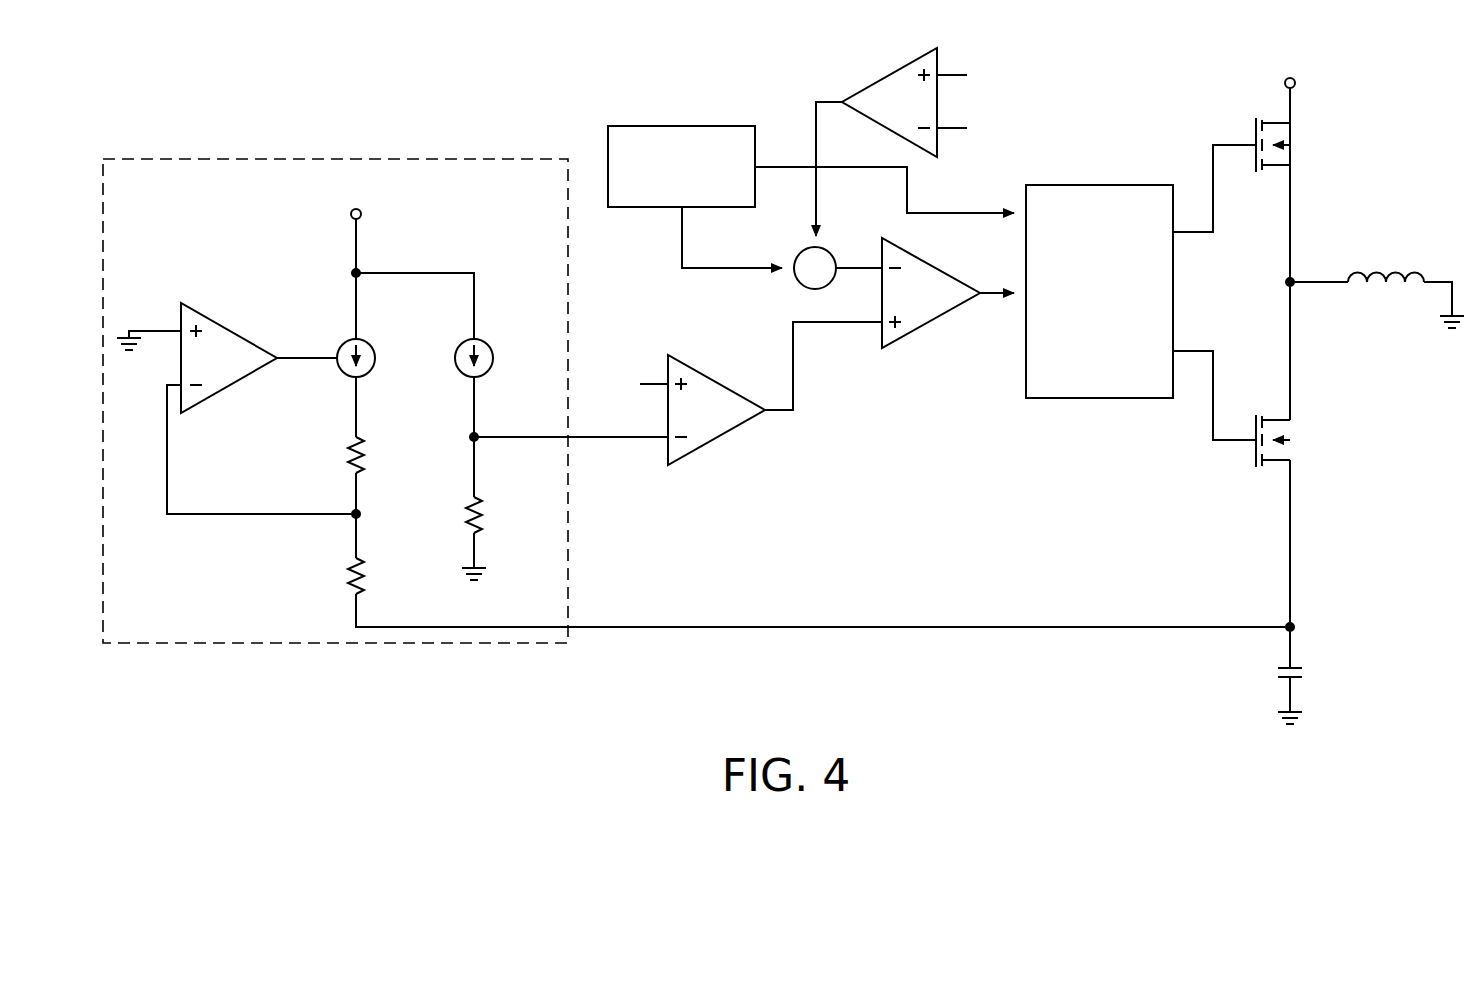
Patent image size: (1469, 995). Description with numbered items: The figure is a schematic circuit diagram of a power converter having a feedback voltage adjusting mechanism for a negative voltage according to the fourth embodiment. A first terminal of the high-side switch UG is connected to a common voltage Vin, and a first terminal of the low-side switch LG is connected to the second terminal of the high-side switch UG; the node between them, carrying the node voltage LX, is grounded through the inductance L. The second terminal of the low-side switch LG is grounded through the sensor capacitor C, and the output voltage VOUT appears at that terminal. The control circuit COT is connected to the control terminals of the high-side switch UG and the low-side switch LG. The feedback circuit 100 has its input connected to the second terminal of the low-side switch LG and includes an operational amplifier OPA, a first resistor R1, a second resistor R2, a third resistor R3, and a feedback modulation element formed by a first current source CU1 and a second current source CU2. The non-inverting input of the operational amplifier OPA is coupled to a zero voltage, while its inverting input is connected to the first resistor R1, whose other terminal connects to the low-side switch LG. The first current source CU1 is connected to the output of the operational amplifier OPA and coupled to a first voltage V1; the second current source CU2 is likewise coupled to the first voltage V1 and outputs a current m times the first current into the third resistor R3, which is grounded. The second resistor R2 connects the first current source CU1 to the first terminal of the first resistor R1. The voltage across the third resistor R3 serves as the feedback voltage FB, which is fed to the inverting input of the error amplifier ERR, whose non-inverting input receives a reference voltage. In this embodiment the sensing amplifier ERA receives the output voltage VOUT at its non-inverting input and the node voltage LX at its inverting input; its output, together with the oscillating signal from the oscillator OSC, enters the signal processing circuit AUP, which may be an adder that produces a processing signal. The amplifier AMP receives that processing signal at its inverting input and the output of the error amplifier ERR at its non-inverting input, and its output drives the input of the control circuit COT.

The feedback circuit 100 is at (428, 159).
The first voltage V1 is at (406, 257).
The operational amplifier OPA is at (232, 327).
The first current source CU1 is at (387, 355).
The second current source CU2 is at (505, 388).
The first resistor R1 is at (819, 570).
The second resistor R2 is at (378, 477).
The third resistor R3 is at (494, 508).
The feedback voltage FB is at (550, 437).
The oscillator OSC is at (684, 124).
The signal processing circuit AUP is at (800, 284).
The sensing amplifier ERA is at (890, 72).
The error amplifier ERR is at (717, 440).
The amplifier AMP is at (933, 325).
The control circuit COT is at (1143, 183).
The common voltage Vin is at (1290, 83).
The high-side switch UG is at (1297, 200).
The node voltage LX is at (1271, 283).
The inductance L is at (1377, 283).
The low-side switch LG is at (1295, 454).
The output voltage VOUT is at (1332, 627).
The sensor capacitor C is at (1303, 675).